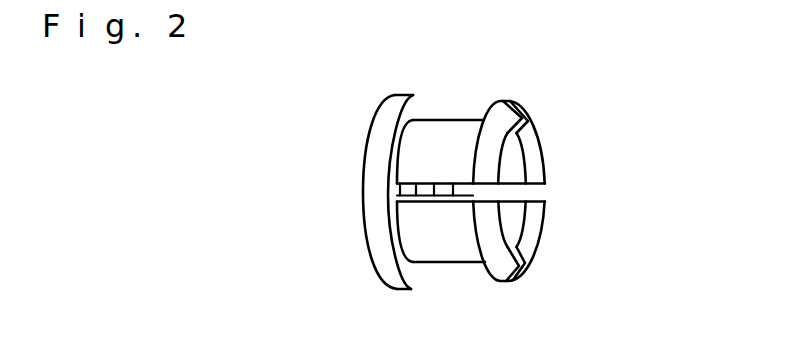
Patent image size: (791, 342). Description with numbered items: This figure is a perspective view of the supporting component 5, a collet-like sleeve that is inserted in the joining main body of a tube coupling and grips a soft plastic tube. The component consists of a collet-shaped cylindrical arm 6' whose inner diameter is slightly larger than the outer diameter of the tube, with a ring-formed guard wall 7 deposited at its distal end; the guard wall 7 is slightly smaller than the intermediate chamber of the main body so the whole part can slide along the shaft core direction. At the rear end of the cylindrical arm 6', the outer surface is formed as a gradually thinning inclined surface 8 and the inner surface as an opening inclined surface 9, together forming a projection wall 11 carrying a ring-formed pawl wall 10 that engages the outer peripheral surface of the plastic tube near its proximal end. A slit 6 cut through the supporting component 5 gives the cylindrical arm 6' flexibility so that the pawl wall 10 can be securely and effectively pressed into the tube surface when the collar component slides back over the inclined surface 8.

The supporting component 5 is at (455, 240).
The slit 6 is at (471, 130).
The cylindrical arm 6' is at (435, 121).
The guard wall 7 is at (390, 167).
The gradually thinning inclined surface 8 is at (490, 147).
The opening inclined surface 9 is at (540, 167).
The pawl wall 10 is at (530, 217).
The projection wall 11 is at (503, 260).